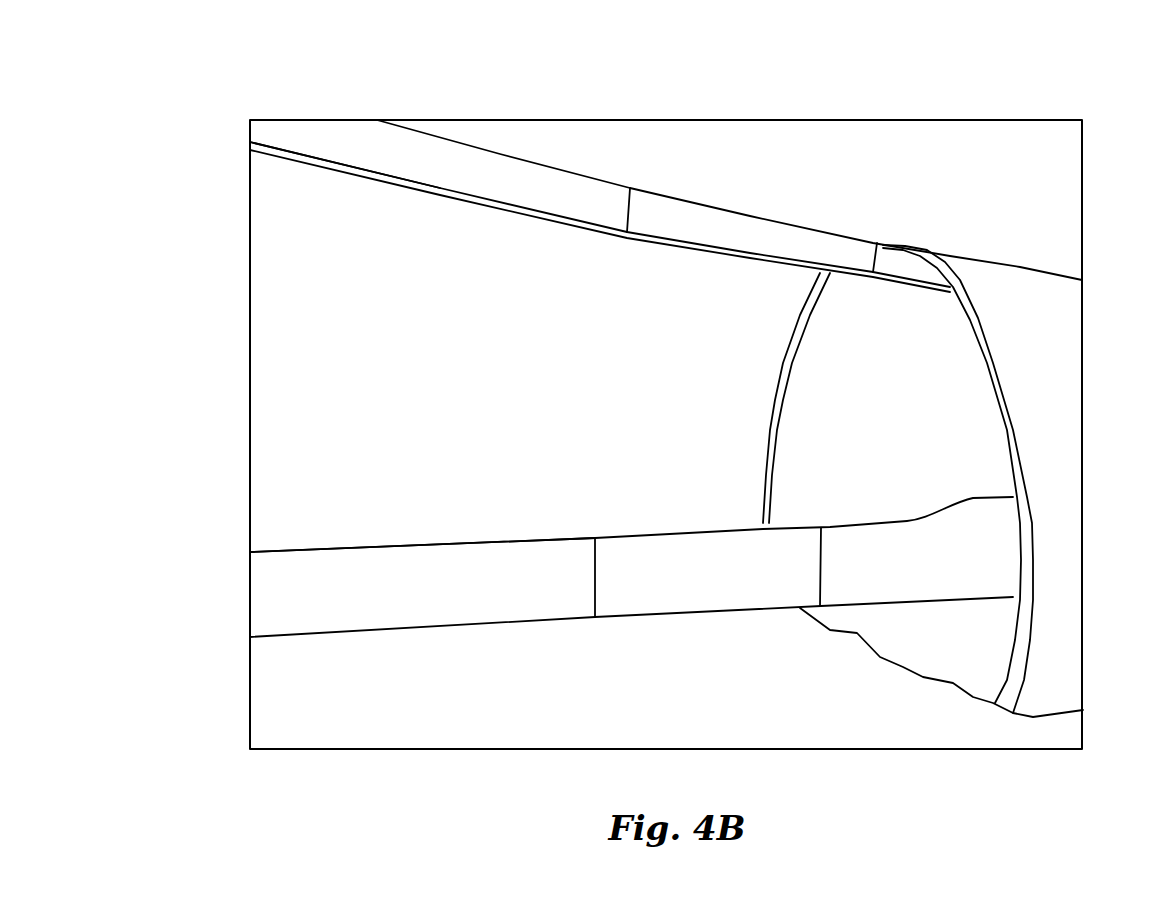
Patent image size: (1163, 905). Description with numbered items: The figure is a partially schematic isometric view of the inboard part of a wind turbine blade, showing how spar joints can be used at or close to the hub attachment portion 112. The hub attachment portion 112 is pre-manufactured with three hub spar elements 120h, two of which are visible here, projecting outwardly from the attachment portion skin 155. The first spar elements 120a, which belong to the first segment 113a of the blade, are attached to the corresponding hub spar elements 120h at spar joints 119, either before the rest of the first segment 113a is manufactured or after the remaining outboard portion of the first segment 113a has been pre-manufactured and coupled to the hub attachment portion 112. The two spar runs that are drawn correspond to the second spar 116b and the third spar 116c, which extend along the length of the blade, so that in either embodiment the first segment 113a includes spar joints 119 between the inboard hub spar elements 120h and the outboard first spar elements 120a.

The hub attachment portion 112 is at (1065, 432).
The first segment 113a is at (449, 655).
The second spar 116b is at (328, 531).
The third spar 116c is at (711, 193).
The spar joint 119 is at (775, 217).
The first spar element 120a is at (317, 133).
The hub spar element 120h is at (895, 255).
The attachment portion skin 155 is at (1045, 312).